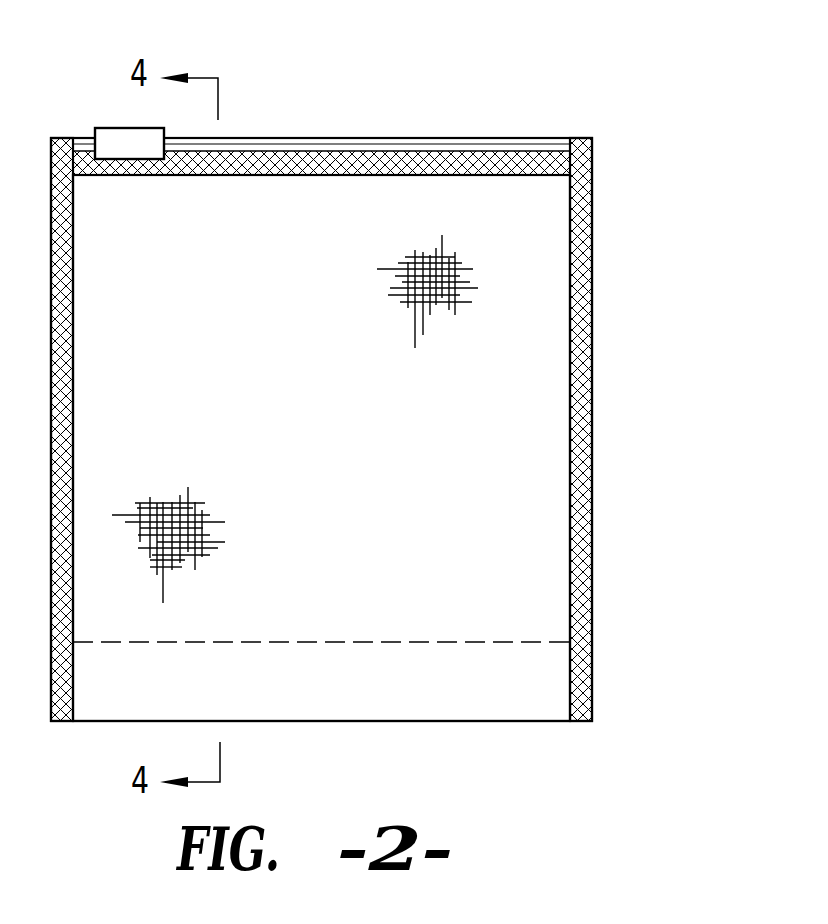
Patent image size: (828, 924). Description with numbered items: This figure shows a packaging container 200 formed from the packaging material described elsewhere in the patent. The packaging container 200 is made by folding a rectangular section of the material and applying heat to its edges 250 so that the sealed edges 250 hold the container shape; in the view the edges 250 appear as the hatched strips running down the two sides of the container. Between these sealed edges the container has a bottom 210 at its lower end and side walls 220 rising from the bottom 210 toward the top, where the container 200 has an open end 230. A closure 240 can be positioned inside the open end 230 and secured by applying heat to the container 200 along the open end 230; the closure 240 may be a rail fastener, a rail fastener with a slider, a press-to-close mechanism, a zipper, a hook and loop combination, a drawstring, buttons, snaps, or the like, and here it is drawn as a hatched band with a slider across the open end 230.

The packaging container 200 is at (620, 115).
The bottom 210 is at (453, 722).
The side walls 220 is at (524, 327).
The open end 230 is at (355, 108).
The closure 240 is at (470, 130).
The edges 250 is at (580, 525).